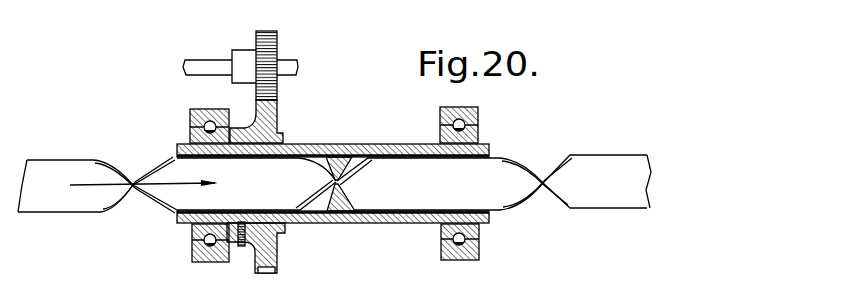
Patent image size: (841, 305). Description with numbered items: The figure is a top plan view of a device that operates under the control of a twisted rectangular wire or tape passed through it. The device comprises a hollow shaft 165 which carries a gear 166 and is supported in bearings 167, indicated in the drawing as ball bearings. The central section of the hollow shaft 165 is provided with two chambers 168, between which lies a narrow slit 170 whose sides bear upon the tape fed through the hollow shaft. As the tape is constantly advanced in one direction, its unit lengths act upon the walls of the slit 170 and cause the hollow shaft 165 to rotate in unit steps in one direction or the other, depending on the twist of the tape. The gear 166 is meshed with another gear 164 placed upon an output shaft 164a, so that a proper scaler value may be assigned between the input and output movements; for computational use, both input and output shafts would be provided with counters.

The gear 164 is at (277, 48).
The output shaft 164a is at (193, 67).
The hollow shaft 165 is at (342, 145).
The gear 166 is at (277, 117).
The bearings 167 is at (192, 118).
The chambers 168 is at (306, 210).
The slit 170 is at (333, 182).